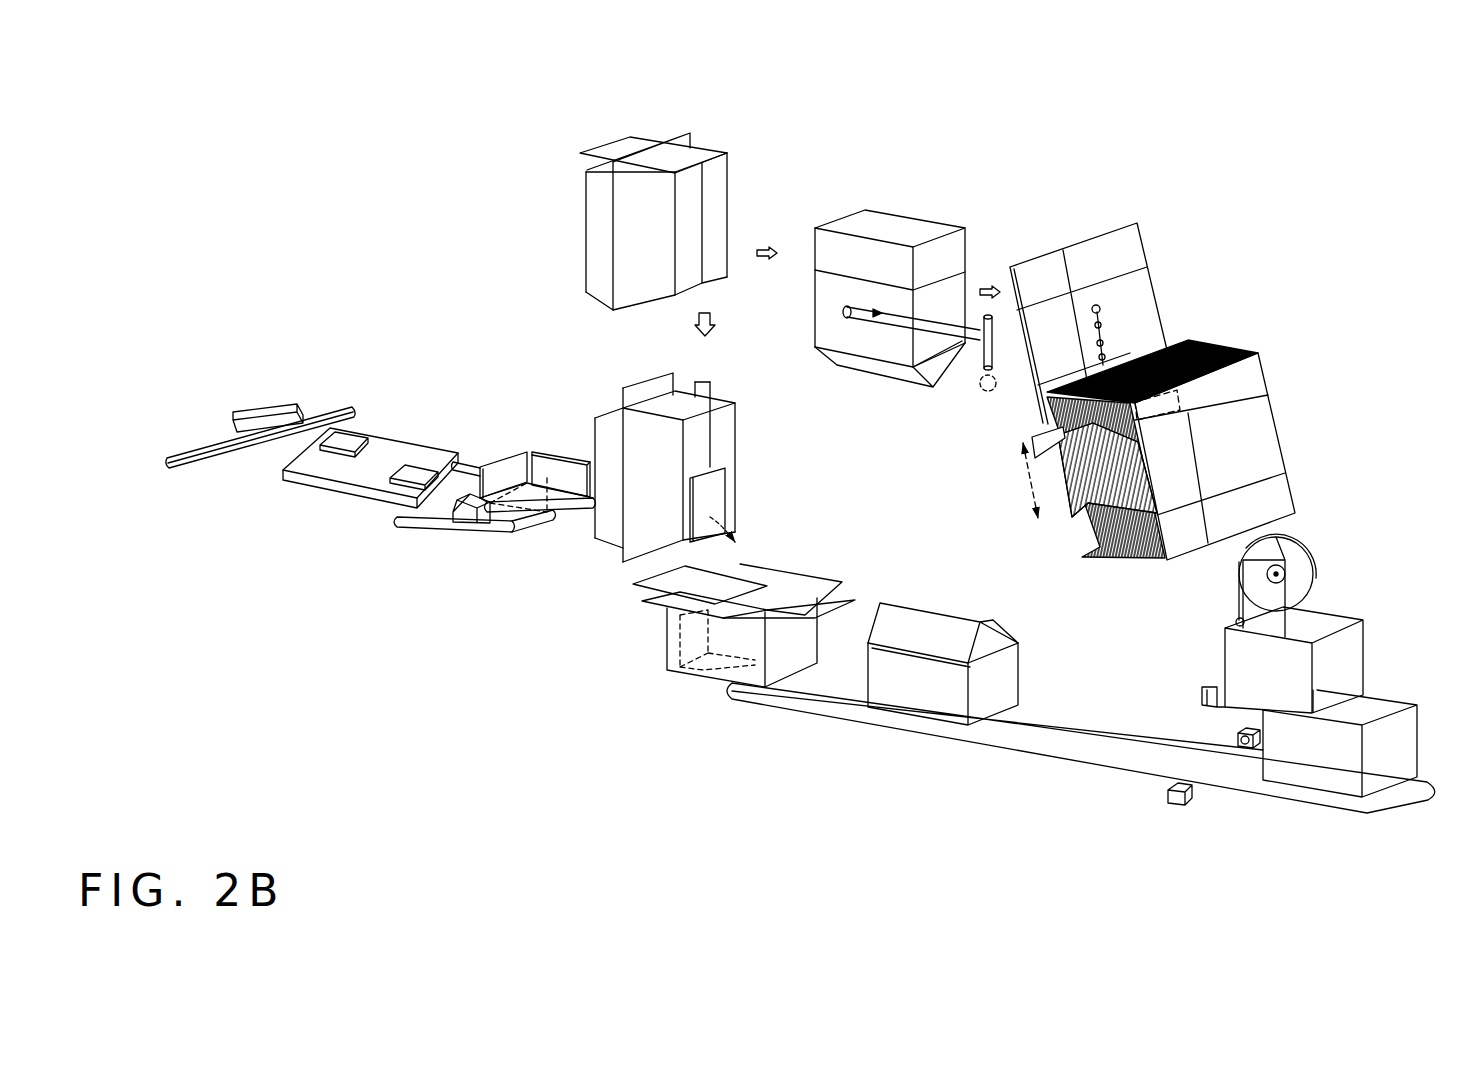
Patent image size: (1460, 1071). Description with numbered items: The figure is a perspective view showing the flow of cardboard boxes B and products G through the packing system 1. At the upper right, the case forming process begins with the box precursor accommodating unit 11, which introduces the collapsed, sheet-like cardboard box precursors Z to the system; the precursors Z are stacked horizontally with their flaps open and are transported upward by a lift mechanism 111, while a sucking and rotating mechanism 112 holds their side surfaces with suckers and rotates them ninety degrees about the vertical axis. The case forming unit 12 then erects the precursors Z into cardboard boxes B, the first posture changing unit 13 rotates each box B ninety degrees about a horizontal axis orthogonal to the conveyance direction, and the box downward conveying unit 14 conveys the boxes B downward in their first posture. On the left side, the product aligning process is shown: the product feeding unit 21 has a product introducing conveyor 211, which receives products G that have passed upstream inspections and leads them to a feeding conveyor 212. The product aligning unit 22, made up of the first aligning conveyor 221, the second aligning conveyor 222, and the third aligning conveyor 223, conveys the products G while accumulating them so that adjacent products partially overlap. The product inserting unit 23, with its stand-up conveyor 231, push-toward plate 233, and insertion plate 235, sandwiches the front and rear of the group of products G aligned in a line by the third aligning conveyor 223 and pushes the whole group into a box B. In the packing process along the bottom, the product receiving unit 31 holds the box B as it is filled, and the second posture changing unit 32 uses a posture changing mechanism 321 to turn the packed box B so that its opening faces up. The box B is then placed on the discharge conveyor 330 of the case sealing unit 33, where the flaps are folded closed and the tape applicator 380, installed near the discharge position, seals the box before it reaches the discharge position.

The packing system 1 is at (1357, 113).
The box precursor accommodating unit 11 is at (1265, 233).
The lift mechanism 111 is at (1110, 323).
The sucking and rotating mechanism 112 is at (980, 337).
The case forming unit 12 is at (960, 173).
The first posture changing unit 13 is at (800, 125).
The box downward conveying unit 14 is at (633, 322).
The cardboard box B is at (733, 152).
The cardboard box precursor Z is at (1265, 417).
The product G is at (273, 415).
The product feeding unit 21 is at (300, 583).
The product introducing conveyor 211 is at (195, 460).
The feeding conveyor 212 is at (340, 483).
The product aligning unit 22 is at (600, 570).
The first aligning conveyor 221 is at (463, 527).
The second aligning conveyor 222 is at (532, 527).
The third aligning conveyor 223 is at (570, 513).
The product inserting unit 23 is at (478, 377).
The stand-up conveyor 231 is at (563, 460).
The push-toward plate 233 is at (517, 480).
The insertion plate 235 is at (500, 468).
The product receiving unit 31 is at (720, 350).
The posture changing mechanism 321 is at (717, 503).
The second posture changing unit 32 is at (630, 715).
The case sealing unit 33 is at (850, 757).
The discharge conveyor 330 is at (1007, 740).
The tape applicator 380 is at (1365, 557).